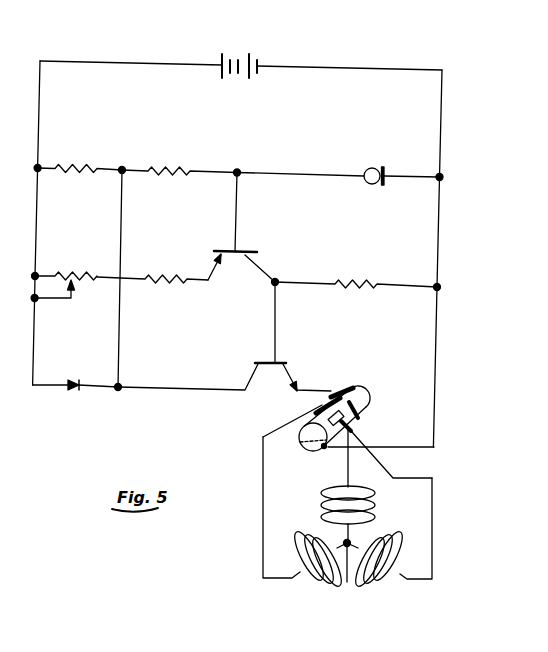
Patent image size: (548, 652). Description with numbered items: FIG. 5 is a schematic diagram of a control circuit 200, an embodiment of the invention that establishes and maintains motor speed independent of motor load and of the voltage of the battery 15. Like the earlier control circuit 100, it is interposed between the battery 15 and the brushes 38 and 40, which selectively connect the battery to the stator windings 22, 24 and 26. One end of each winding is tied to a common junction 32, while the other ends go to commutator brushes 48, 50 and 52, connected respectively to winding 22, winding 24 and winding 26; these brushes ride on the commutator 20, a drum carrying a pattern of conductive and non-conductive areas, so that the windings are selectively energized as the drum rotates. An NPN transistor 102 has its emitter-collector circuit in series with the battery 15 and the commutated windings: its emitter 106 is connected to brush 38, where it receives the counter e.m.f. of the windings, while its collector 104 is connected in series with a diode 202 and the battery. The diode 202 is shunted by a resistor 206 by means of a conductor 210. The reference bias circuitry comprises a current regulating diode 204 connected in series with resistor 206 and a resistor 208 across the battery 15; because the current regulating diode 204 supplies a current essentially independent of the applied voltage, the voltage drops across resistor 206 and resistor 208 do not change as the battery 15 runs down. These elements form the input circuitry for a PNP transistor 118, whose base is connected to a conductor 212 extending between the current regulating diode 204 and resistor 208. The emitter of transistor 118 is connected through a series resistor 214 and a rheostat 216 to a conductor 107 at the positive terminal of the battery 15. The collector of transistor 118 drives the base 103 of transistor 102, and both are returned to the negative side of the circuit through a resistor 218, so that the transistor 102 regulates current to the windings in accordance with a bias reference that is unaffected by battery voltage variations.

The battery 15 is at (262, 59).
The commutator 20 is at (368, 396).
The stator winding 22 is at (386, 585).
The stator winding 24 is at (332, 586).
The stator winding 26 is at (376, 509).
The common junction 32 is at (348, 584).
The brush 38 is at (343, 386).
The brush 40 is at (325, 449).
The commutator brush 48 is at (362, 411).
The commutator brush 50 is at (318, 401).
The commutator brush 52 is at (350, 436).
The control circuit 100 is at (446, 207).
The transistor 102 is at (282, 362).
The base 103 is at (274, 314).
The collector 104 is at (253, 367).
The emitter 106 is at (312, 380).
The conductor 107 is at (35, 203).
The transistor 118 is at (246, 265).
The control circuit 200 is at (475, 267).
The diode 202 is at (70, 391).
The current regulating diode 204 is at (373, 168).
The resistor 206 is at (78, 165).
The resistor 208 is at (167, 167).
The conductor 210 is at (119, 314).
The conductor 212 is at (290, 172).
The resistor 214 is at (168, 281).
The rheostat 216 is at (68, 275).
The resistor 218 is at (346, 290).